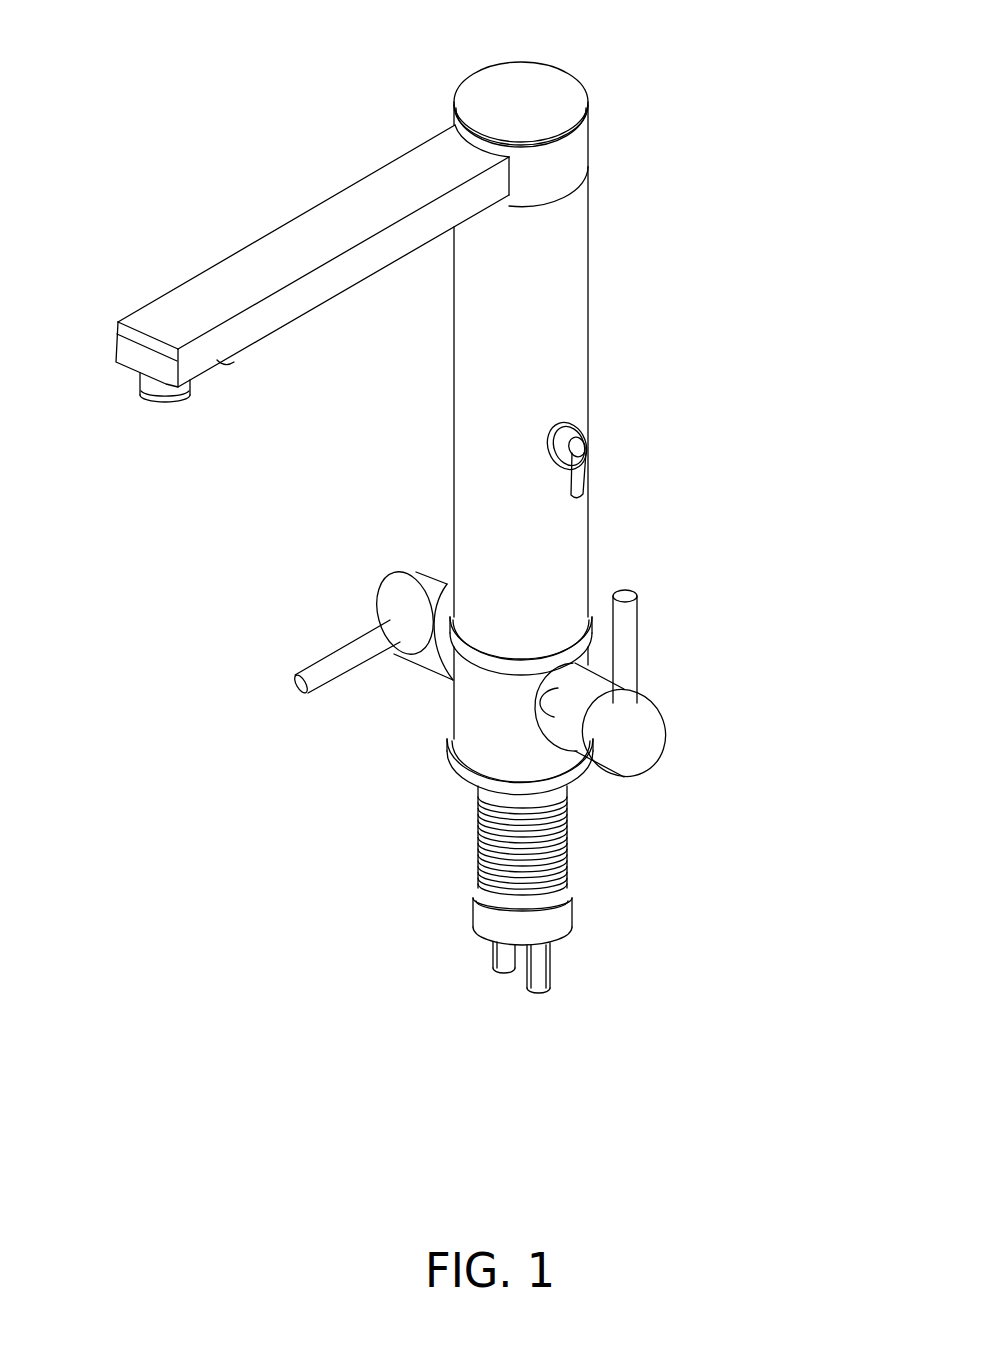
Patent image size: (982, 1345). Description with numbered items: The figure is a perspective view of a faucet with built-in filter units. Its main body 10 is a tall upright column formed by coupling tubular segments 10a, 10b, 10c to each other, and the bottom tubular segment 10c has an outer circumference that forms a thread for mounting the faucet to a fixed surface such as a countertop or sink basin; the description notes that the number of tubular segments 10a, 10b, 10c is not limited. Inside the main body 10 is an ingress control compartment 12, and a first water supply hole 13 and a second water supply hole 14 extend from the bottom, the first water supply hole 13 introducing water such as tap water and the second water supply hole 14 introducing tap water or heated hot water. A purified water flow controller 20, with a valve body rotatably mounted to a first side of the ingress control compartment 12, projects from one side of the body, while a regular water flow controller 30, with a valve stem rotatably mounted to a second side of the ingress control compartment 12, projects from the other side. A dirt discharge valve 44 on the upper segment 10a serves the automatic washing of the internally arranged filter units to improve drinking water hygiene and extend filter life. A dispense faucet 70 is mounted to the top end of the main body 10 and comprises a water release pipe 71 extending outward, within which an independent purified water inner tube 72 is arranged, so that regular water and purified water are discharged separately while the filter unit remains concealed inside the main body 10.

The main body 10 is at (511, 556).
The tubular segment 10a is at (478, 398).
The tubular segment 10b is at (472, 710).
The bottom tubular segment 10c is at (480, 853).
The ingress control compartment 12 is at (557, 693).
The first water supply hole 13 is at (505, 972).
The second water supply hole 14 is at (537, 993).
The purified water flow controller 20 is at (393, 600).
The regular water flow controller 30 is at (652, 734).
The dirt discharge valve 44 is at (580, 448).
The dispense faucet 70 is at (528, 77).
The water release pipe 71 is at (312, 259).
The purified water inner tube 72 is at (388, 197).